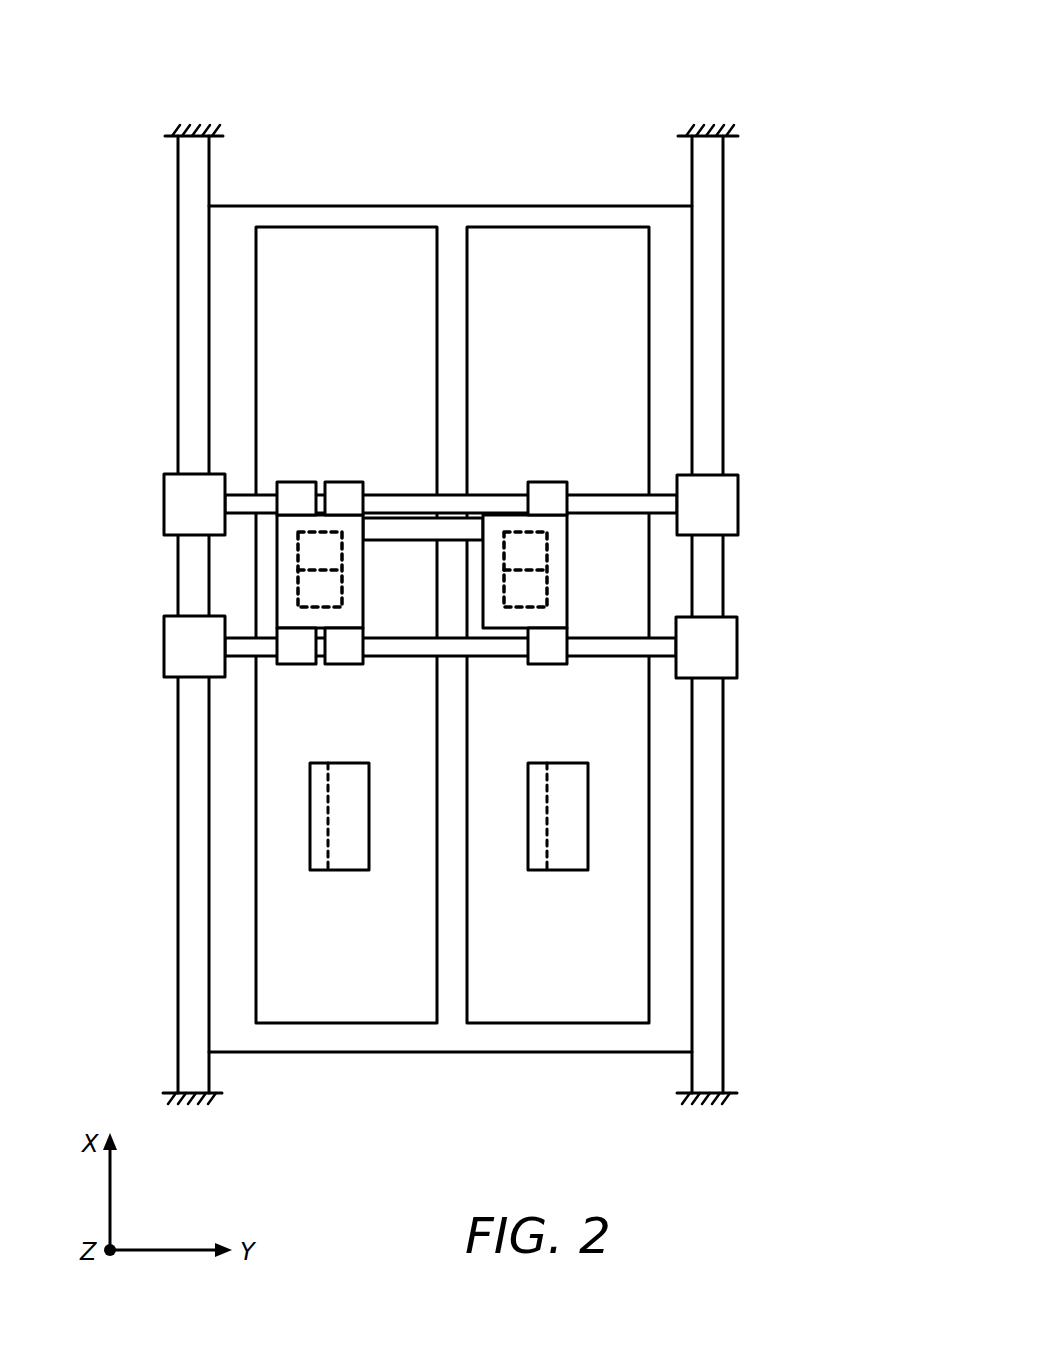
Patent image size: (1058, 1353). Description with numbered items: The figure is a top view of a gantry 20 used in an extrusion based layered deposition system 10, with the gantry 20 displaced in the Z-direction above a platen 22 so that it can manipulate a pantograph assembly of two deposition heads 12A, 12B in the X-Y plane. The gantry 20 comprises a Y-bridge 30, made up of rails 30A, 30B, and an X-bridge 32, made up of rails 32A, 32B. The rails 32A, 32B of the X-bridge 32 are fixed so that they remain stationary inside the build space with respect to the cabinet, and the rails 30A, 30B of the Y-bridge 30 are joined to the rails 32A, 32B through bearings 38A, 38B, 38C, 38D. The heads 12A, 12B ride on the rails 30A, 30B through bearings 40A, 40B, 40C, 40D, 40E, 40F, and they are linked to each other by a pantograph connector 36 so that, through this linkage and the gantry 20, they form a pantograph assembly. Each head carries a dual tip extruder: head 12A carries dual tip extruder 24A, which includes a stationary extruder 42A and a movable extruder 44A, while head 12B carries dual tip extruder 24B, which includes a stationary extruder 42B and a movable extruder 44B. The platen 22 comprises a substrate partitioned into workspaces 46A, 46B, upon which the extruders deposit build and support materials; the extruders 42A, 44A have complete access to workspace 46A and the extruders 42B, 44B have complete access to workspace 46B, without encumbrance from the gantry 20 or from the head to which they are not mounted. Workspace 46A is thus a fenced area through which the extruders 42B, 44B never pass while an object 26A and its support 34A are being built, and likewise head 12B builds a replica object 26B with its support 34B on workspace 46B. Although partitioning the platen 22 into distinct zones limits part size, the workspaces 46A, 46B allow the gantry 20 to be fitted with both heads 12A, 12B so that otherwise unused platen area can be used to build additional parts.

The extrusion based layered deposition system 10 is at (310, 118).
The head 12A is at (354, 572).
The head 12B is at (561, 572).
The gantry 20 is at (485, 585).
The platen 22 is at (660, 1040).
The dual tip extruder 24A is at (266, 563).
The dual tip extruder 24B is at (557, 578).
The replica object 26A is at (355, 841).
The replica object 26B is at (566, 839).
The Y-bridge 30 is at (457, 585).
The rail 30A is at (662, 495).
The rail 30B is at (663, 658).
The X-bridge 32 is at (474, 614).
The rail 32A is at (188, 174).
The rail 32B is at (715, 171).
The support 34A is at (317, 837).
The support 34B is at (533, 826).
The pantograph connector 36 is at (468, 533).
The bearing 38A is at (194, 504).
The bearing 38B is at (707, 505).
The bearing 38C is at (194, 646).
The bearing 38D is at (706, 647).
The bearing 40A is at (297, 497).
The bearing 40B is at (343, 497).
The bearing 40C is at (292, 664).
The bearing 40D is at (343, 664).
The bearing 40E is at (545, 497).
The bearing 40F is at (548, 664).
The stationary extruder 42A is at (365, 569).
The stationary extruder 42B is at (571, 569).
The movable extruder 44A is at (342, 557).
The movable extruder 44B is at (547, 557).
The workspace 46A is at (346, 625).
The workspace 46B is at (558, 625).